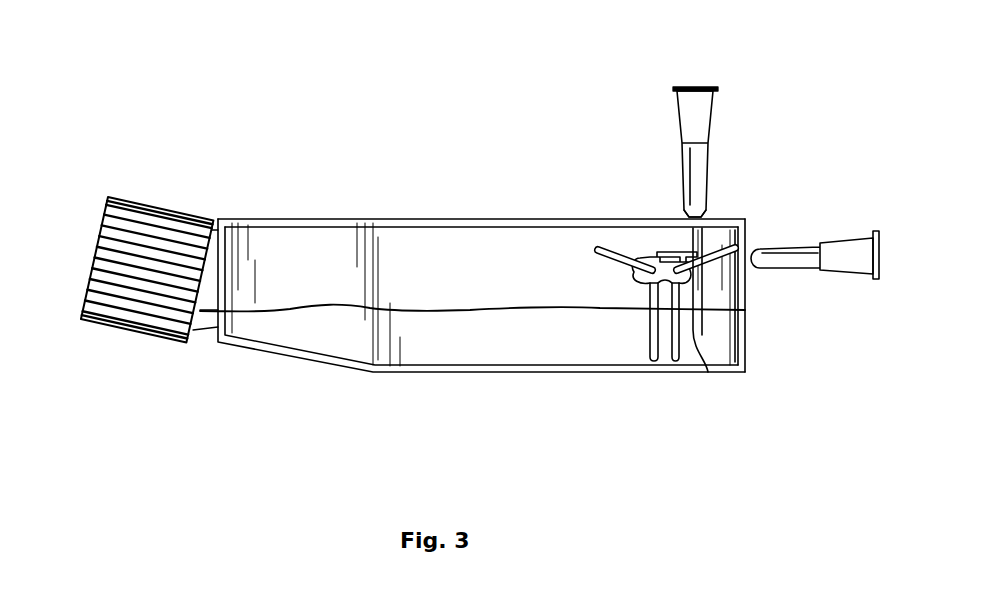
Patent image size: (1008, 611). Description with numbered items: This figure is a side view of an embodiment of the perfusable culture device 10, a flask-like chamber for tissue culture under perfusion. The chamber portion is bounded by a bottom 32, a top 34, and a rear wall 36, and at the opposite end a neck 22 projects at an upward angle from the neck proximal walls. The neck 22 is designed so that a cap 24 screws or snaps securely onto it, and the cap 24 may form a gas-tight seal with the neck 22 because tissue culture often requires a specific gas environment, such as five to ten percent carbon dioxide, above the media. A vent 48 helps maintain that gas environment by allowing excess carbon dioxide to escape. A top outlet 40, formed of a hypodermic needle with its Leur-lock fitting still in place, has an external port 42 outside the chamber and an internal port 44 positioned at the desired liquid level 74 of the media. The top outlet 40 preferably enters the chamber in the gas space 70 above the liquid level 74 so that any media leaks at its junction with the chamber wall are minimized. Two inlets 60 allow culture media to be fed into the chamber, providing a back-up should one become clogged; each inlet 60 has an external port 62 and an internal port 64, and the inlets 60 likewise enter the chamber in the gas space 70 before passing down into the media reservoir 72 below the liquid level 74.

The perfusable culture device 10 is at (523, 140).
The neck 22 is at (197, 332).
The cap 24 is at (100, 238).
The bottom 32 is at (603, 373).
The top 34 is at (332, 219).
The rear wall 36 is at (745, 328).
The top outlet 40 is at (713, 126).
The external port 42 is at (697, 86).
The internal port 44 is at (708, 372).
The vent 48 is at (800, 247).
The inlets 60 is at (693, 243).
The external port 62 is at (598, 252).
The internal port 64 is at (680, 364).
The gas space 70 is at (430, 252).
The lower chamber 72 is at (547, 342).
The liquid level 74 is at (443, 318).